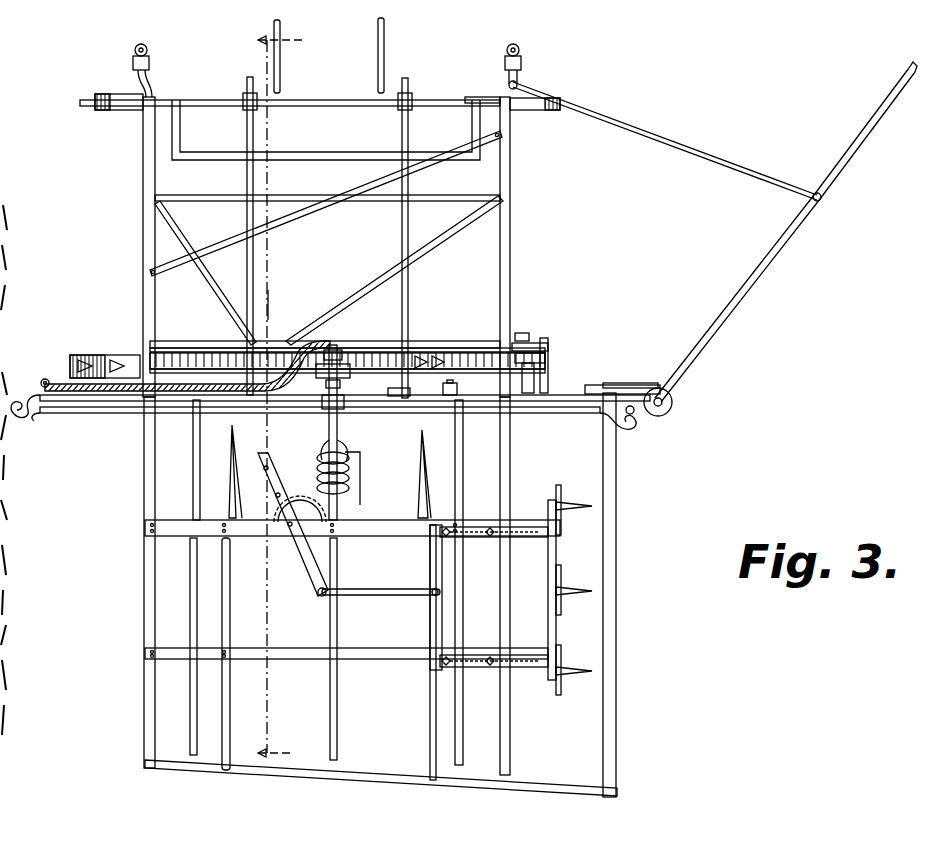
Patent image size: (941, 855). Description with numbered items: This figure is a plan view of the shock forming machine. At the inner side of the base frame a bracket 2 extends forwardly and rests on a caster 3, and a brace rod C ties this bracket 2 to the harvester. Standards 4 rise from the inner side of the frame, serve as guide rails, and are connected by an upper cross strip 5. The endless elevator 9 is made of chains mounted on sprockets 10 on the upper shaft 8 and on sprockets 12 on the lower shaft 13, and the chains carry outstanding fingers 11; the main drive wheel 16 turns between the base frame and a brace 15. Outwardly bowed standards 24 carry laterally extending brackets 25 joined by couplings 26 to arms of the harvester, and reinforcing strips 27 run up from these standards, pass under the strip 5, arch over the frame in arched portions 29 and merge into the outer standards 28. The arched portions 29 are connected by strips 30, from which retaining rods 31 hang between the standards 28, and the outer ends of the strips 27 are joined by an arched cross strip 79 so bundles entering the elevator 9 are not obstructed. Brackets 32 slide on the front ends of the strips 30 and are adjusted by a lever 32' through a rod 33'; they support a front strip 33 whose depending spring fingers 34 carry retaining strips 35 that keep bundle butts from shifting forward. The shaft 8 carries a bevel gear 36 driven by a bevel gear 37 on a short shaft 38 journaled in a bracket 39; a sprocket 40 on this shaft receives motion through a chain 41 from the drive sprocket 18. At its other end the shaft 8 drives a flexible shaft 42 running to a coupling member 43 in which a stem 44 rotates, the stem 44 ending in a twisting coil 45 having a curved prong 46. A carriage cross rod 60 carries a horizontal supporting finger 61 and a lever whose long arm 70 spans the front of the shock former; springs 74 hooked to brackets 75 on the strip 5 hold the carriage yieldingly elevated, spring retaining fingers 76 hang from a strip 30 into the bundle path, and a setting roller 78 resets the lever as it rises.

The bracket 2 is at (640, 392).
The caster 3 is at (610, 384).
The standards 4 is at (290, 391).
The upper cross strip 5 is at (188, 402).
The upper shaft 8 is at (480, 368).
The endless elevator 9 is at (270, 292).
The sprockets 10 is at (395, 397).
The outstanding fingers 11 is at (408, 94).
The sprockets 12 is at (245, 96).
The shaft 13 is at (334, 100).
The brace 15 is at (322, 300).
The main drive wheel 16 is at (80, 356).
The drive sprocket 18 is at (178, 345).
The outwardly bowed standards 24 is at (133, 112).
The laterally extending brackets 25 is at (150, 80).
The couplings 26 is at (133, 46).
The reinforcing strips 27 is at (143, 216).
The outer standards 28 is at (144, 703).
The arched portions 29 is at (144, 502).
The strips 30 is at (398, 540).
The retaining rods 31 is at (230, 622).
The brackets 32 is at (494, 597).
The lever 32' is at (293, 528).
The front strip 33 is at (512, 590).
The rod 33' is at (379, 614).
The spring fingers 34 is at (572, 500).
The retaining strips 35 is at (558, 486).
The bevel gear 36 is at (540, 380).
The bevel gear 37 is at (548, 362).
The short laterally extending shaft 38 is at (524, 334).
The bracket 39 is at (548, 348).
The sprocket 40 is at (546, 340).
The chain 41 is at (412, 350).
The flexible shaft 42 is at (116, 360).
The coupling member 43 is at (338, 350).
The stem 44 is at (344, 458).
The twisting coil 45 is at (360, 495).
The curved prong 46 is at (350, 476).
The cross rod 60 is at (140, 414).
The supporting finger 61 is at (190, 600).
The long arm 70 is at (500, 492).
The springs 74 is at (22, 414).
The brackets 75 is at (44, 380).
The spring retaining fingers 76 is at (234, 462).
The setting roller 78 is at (449, 398).
The arched cross strip 79 is at (203, 152).
The brace rod C is at (858, 146).